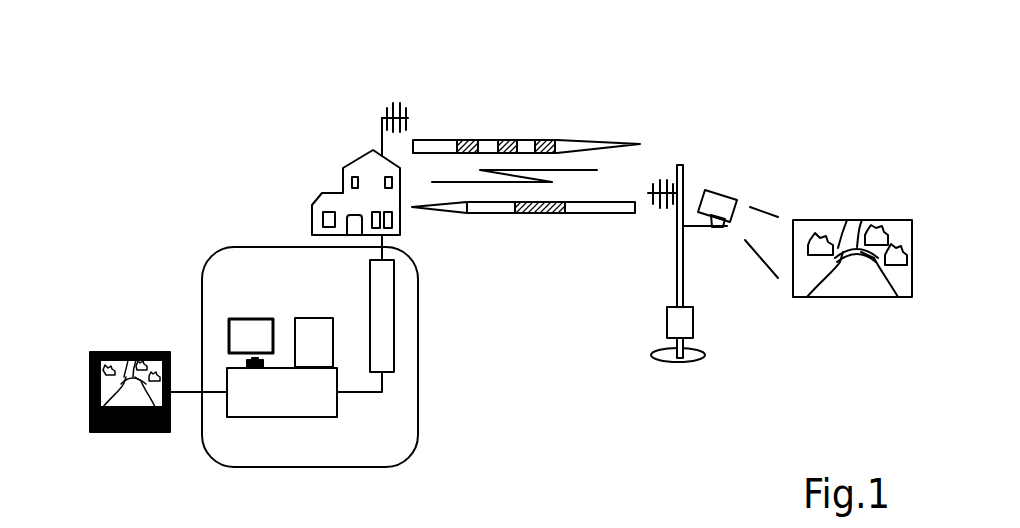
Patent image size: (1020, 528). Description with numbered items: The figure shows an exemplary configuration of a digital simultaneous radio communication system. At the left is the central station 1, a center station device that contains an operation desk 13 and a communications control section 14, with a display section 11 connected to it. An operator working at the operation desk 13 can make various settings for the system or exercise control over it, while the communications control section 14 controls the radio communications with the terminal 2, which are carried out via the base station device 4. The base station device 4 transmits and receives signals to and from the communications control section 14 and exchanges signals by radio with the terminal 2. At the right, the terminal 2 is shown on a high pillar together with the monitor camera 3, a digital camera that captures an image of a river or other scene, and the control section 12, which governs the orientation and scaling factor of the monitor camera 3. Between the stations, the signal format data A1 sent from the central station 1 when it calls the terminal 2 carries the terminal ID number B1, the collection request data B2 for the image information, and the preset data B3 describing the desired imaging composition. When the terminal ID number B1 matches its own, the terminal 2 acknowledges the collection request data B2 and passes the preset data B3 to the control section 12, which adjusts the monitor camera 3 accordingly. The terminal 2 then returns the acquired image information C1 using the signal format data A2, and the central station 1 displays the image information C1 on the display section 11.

The central station 1 is at (425, 290).
The terminal 2 is at (668, 308).
The monitor camera 3 is at (725, 193).
The base station device 4 is at (333, 193).
The display section 11 is at (130, 353).
The control section 12 is at (693, 320).
The operation desk 13 is at (253, 318).
The communications control section 14 is at (367, 305).
The signal format data A1 is at (432, 138).
The terminal ID number B1 is at (470, 138).
The collection request data B2 is at (510, 138).
The preset data B3 is at (548, 138).
The signal format data A2 is at (490, 215).
The image information C1 is at (538, 215).